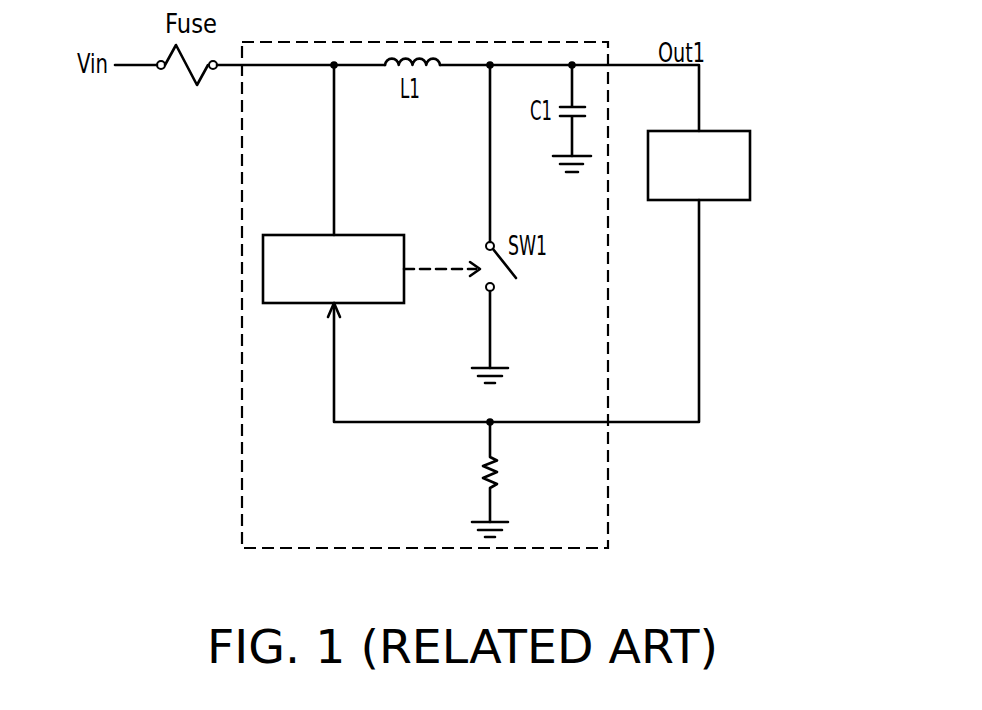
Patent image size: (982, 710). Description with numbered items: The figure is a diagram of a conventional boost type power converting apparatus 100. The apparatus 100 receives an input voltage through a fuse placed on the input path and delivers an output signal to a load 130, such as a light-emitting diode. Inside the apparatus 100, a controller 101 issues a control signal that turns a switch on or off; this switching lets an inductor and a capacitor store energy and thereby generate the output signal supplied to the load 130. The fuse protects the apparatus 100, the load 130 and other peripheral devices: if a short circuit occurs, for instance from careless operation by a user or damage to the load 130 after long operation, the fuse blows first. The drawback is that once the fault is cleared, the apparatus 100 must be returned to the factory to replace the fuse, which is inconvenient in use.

The boost type power converting apparatus 100 is at (608, 495).
The controller 101 is at (366, 235).
The load 130 is at (720, 131).